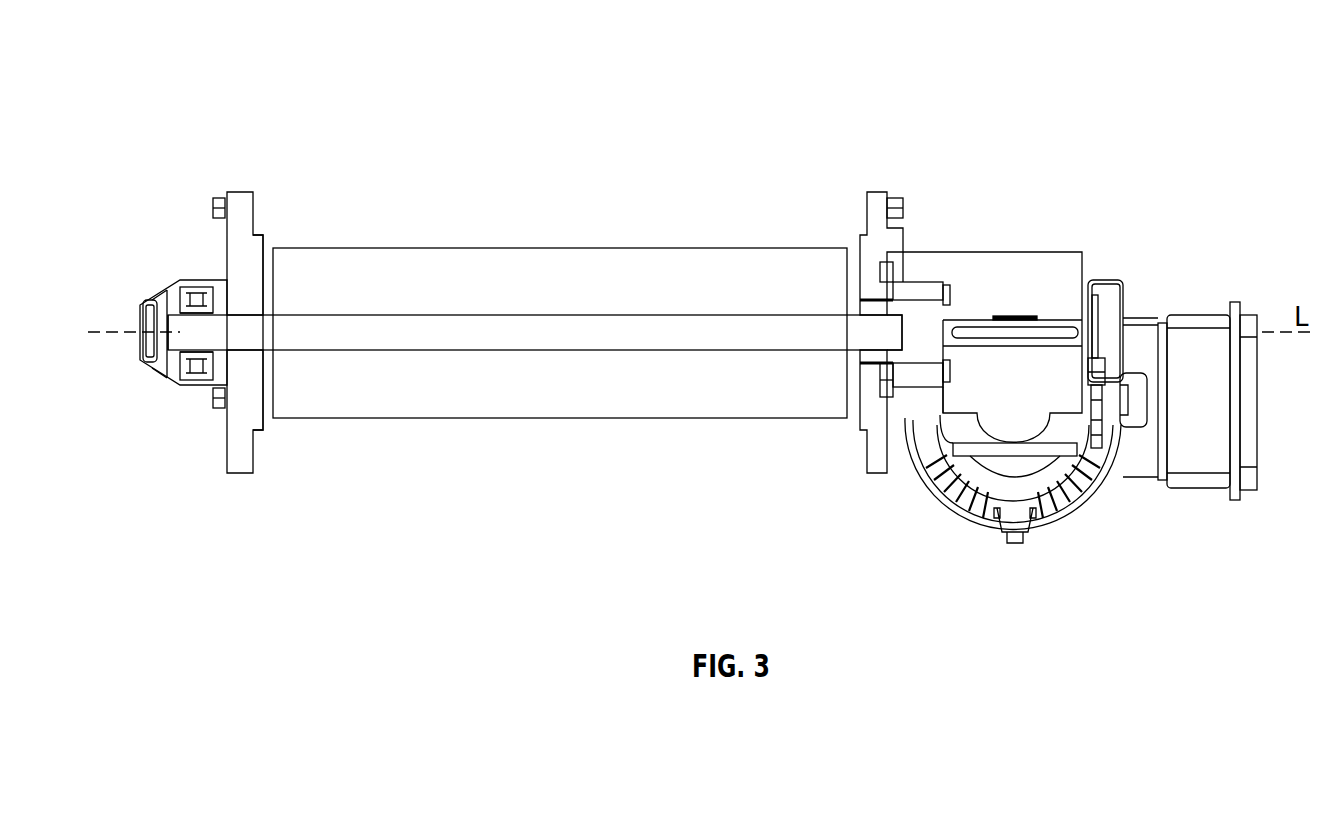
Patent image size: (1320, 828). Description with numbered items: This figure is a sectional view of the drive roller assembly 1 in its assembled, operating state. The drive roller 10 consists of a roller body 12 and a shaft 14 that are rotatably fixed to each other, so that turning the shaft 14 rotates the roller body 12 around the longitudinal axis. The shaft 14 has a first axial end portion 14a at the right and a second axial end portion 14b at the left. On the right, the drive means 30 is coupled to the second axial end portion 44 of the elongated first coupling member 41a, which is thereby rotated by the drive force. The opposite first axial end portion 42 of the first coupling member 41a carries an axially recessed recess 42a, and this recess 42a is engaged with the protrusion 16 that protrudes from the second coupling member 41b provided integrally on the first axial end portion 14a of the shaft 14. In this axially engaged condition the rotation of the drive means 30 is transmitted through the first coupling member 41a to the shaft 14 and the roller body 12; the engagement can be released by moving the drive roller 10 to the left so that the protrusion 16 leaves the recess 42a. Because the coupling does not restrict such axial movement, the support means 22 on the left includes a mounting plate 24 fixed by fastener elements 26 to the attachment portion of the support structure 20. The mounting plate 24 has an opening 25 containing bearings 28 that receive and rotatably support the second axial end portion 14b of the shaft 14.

The drive roller assembly 1 is at (562, 130).
The drive roller 10 is at (628, 220).
The roller body 12 is at (445, 248).
The shaft 14 is at (315, 328).
The first axial end portion 14a is at (888, 280).
The second axial end portion 14b is at (177, 330).
The protrusion 16 is at (905, 328).
The support structure 20 is at (156, 190).
The support means 22 is at (243, 192).
The mounting plate 24 is at (272, 262).
The opening 25 is at (215, 365).
The fastener elements 26 is at (216, 198).
The bearings 28 is at (223, 303).
The drive means 30 is at (1195, 318).
The first coupling member 41a is at (1043, 320).
The second coupling member 41b is at (926, 276).
The first axial end portion 42 is at (858, 368).
The recess 42a is at (862, 300).
The second axial end portion 44 is at (1093, 317).